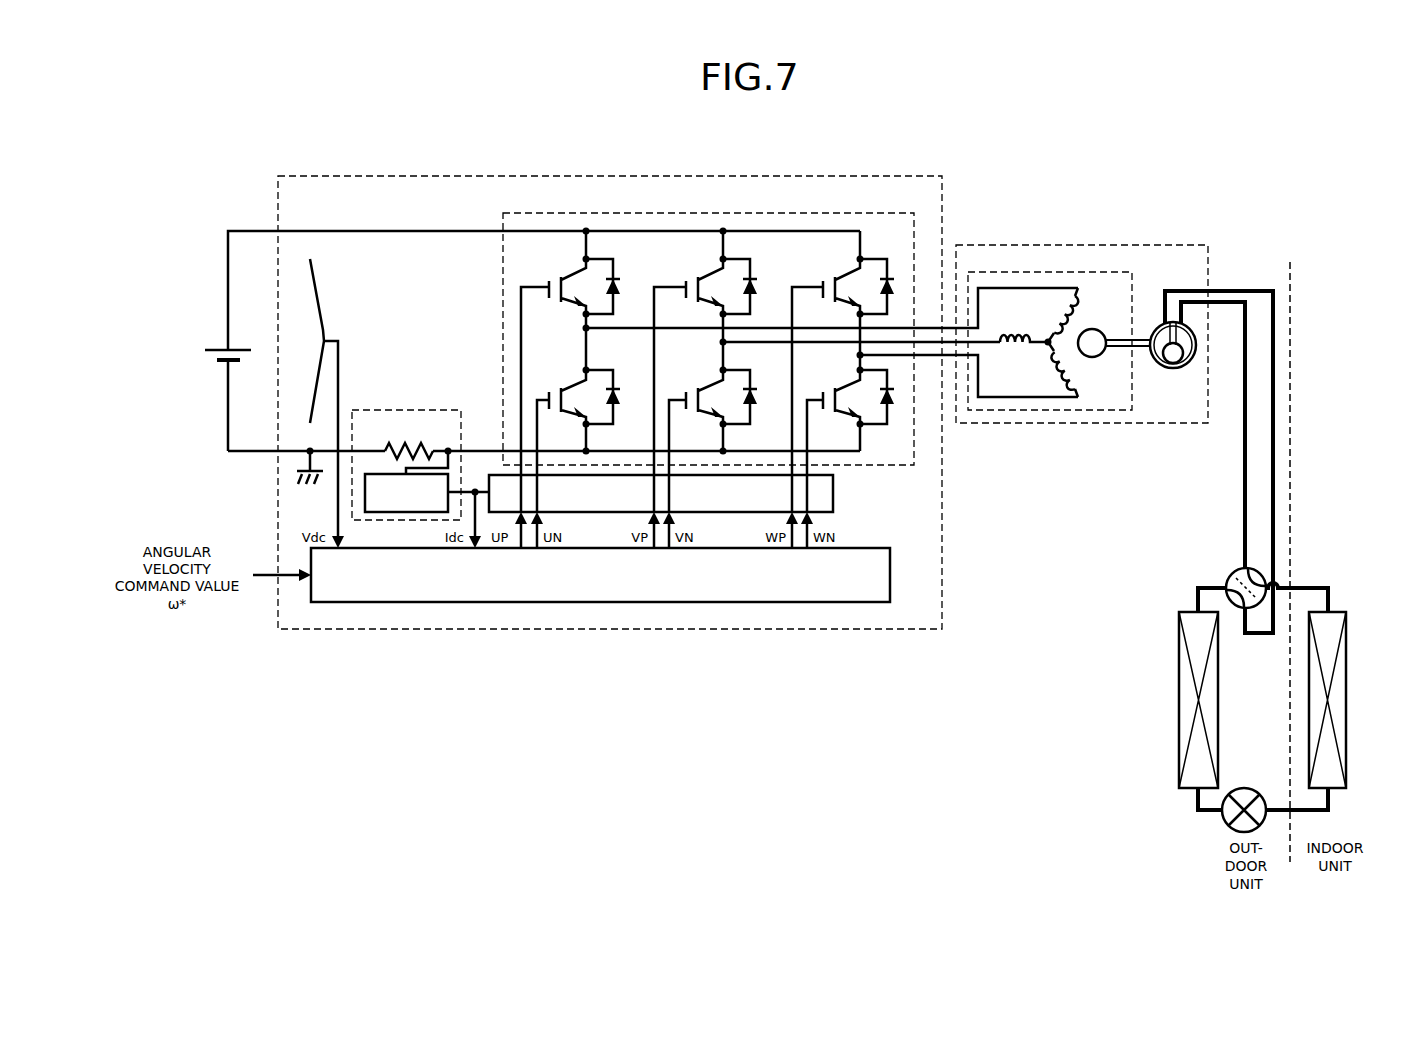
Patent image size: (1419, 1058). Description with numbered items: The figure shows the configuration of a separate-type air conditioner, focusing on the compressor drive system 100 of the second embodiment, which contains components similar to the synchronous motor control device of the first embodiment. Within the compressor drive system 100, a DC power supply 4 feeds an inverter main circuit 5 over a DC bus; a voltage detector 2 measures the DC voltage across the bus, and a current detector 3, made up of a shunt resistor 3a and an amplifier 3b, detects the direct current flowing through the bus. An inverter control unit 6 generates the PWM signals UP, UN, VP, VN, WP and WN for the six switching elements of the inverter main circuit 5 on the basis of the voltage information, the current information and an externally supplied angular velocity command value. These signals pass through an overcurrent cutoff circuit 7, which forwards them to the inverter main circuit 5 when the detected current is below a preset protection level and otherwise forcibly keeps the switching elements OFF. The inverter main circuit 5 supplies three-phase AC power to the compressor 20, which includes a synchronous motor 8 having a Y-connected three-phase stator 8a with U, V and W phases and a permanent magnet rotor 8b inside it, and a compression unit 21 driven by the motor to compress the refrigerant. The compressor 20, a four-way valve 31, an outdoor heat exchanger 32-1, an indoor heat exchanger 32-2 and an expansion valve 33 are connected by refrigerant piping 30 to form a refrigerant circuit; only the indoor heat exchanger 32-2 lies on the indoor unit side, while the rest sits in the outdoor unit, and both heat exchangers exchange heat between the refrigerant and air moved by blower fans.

The compressor drive system 100 is at (884, 178).
The voltage detector 2 is at (325, 330).
The DC power supply 4 is at (215, 351).
The current detector 3 is at (436, 410).
The shunt resistor 3a is at (412, 448).
The amplifier 3b is at (382, 474).
The inverter main circuit 5 is at (872, 214).
The overcurrent cutoff circuit 7 is at (833, 493).
The inverter control unit 6 is at (890, 577).
The compressor 20 is at (1165, 247).
The synchronous motor 8 is at (1108, 274).
The stator 8a is at (1090, 378).
The permanent magnet rotor 8b is at (1104, 352).
The compression unit 21 is at (1176, 369).
The four-way valve 31 is at (1234, 576).
The refrigerant piping 30 is at (1302, 588).
The outdoor heat exchanger 32-1 is at (1218, 690).
The indoor heat exchanger 32-2 is at (1346, 690).
The expansion valve 33 is at (1245, 788).